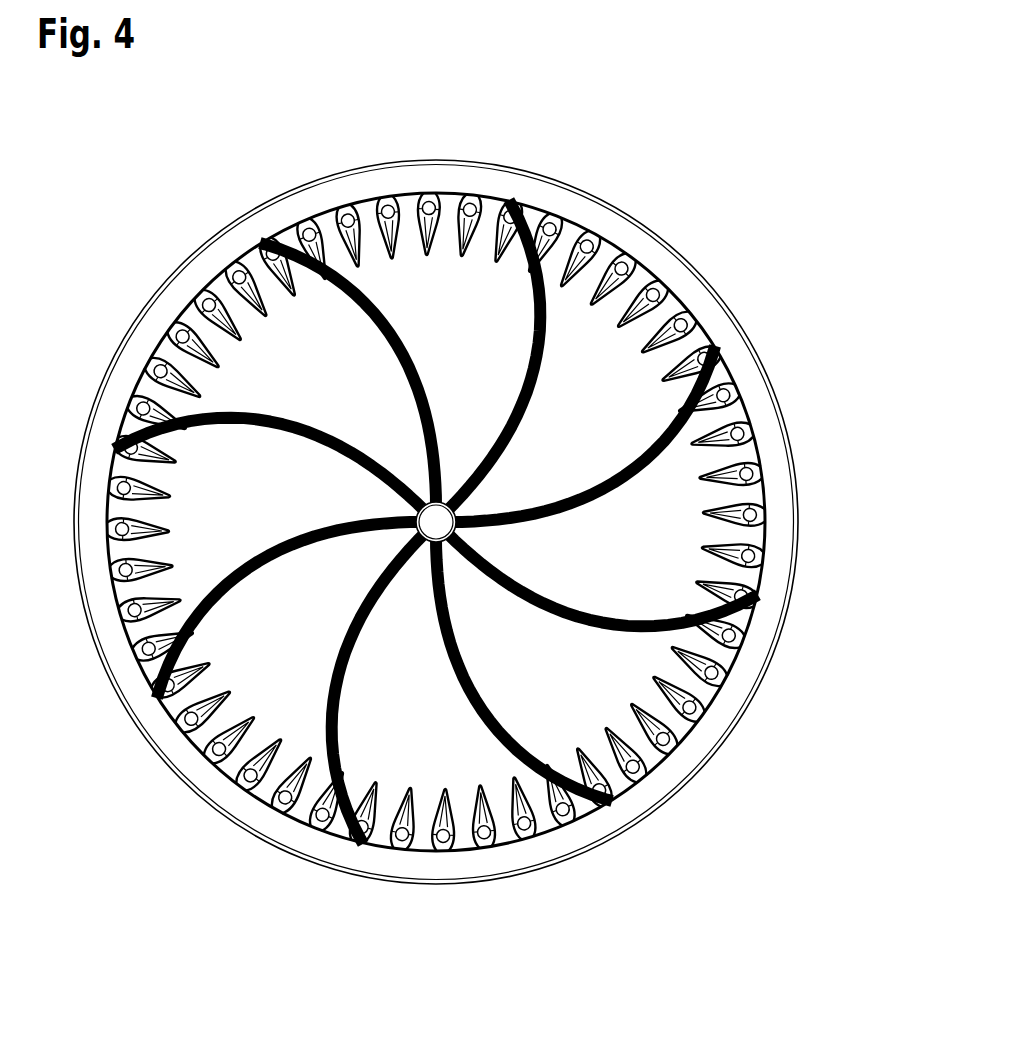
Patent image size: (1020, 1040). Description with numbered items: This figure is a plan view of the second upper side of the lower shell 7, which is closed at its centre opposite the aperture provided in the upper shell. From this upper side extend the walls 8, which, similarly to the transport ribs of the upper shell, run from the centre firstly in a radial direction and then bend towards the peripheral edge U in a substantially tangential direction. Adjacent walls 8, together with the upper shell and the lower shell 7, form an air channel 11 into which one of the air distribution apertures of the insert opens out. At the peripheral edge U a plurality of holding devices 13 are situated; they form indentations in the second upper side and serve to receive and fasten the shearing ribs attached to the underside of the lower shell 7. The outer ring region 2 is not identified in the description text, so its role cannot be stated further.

The lower shell 7 is at (836, 360).
The outer rim ring 2 is at (775, 497).
The walls 8 is at (547, 353).
The air channel 11 is at (212, 523).
The holding devices 13 is at (233, 735).
The peripheral edge U is at (150, 307).